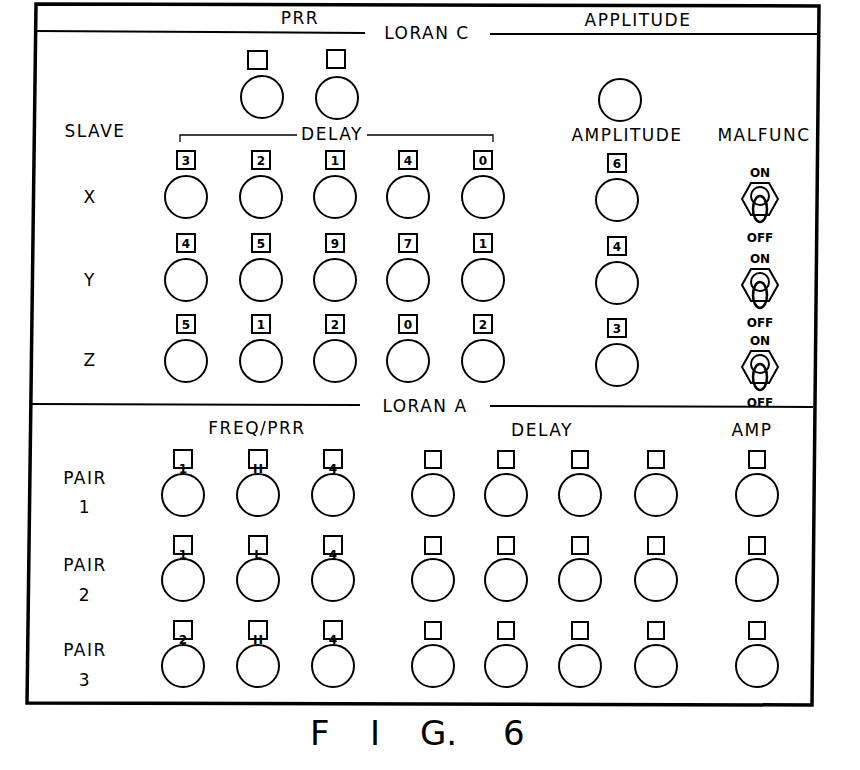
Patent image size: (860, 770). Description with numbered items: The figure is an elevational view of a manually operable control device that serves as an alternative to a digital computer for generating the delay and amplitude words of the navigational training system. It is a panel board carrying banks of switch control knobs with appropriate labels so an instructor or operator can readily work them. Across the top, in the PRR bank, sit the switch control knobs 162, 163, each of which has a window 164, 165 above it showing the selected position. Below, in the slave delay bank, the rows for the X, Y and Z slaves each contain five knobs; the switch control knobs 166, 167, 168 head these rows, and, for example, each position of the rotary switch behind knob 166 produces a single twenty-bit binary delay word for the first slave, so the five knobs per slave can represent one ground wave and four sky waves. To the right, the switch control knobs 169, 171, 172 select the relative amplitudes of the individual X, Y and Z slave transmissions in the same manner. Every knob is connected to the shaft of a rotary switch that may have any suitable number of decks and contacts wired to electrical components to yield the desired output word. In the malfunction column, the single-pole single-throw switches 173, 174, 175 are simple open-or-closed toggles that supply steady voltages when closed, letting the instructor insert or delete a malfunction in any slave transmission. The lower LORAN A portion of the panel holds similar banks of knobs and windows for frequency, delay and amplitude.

The switch control knob 162 is at (268, 93).
The switch control knob 163 is at (341, 96).
The window 164 is at (253, 64).
The window 165 is at (345, 63).
The switch control knob 166 is at (200, 201).
The switch control knob 167 is at (200, 289).
The switch control knob 168 is at (200, 370).
The switch control knob 169 is at (631, 205).
The switch control knob 171 is at (631, 289).
The switch control knob 172 is at (631, 372).
The single-pole single-throw switch 173 is at (776, 200).
The single-pole single-throw switch 174 is at (776, 286).
The single-pole single-throw switch 175 is at (776, 368).